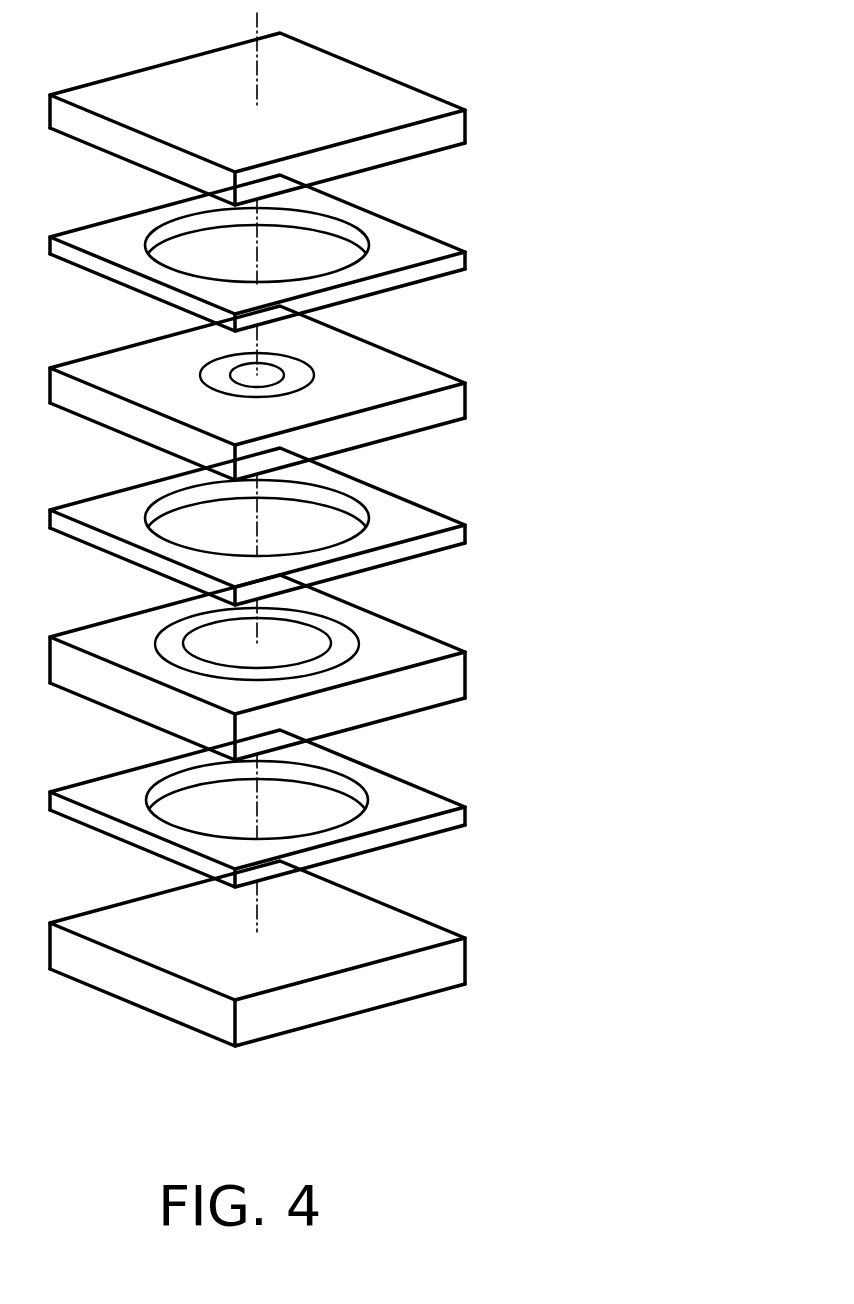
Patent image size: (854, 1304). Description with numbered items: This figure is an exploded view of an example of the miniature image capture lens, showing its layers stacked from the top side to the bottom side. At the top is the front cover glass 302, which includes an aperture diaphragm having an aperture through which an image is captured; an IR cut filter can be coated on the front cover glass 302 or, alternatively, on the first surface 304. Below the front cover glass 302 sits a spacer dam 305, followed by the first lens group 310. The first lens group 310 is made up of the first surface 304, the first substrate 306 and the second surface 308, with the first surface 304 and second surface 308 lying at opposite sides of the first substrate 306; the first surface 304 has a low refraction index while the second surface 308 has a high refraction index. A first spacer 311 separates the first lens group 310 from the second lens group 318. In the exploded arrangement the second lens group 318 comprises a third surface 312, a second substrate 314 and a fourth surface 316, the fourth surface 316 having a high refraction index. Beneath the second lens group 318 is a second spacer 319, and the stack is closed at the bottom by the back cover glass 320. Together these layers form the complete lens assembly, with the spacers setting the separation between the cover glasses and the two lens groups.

The front cover glass 302 is at (387, 105).
The spacer dam 305 is at (387, 252).
The first surface 304 is at (293, 372).
The first substrate 306 is at (427, 410).
The second surface 308 is at (388, 438).
The first lens group 310 is at (380, 393).
The first spacer 311 is at (423, 527).
The third surface 312 is at (335, 635).
The second substrate 314 is at (427, 690).
The fourth surface 316 is at (412, 715).
The second lens group 318 is at (380, 667).
The second spacer 319 is at (423, 807).
The back cover glass 320 is at (387, 940).